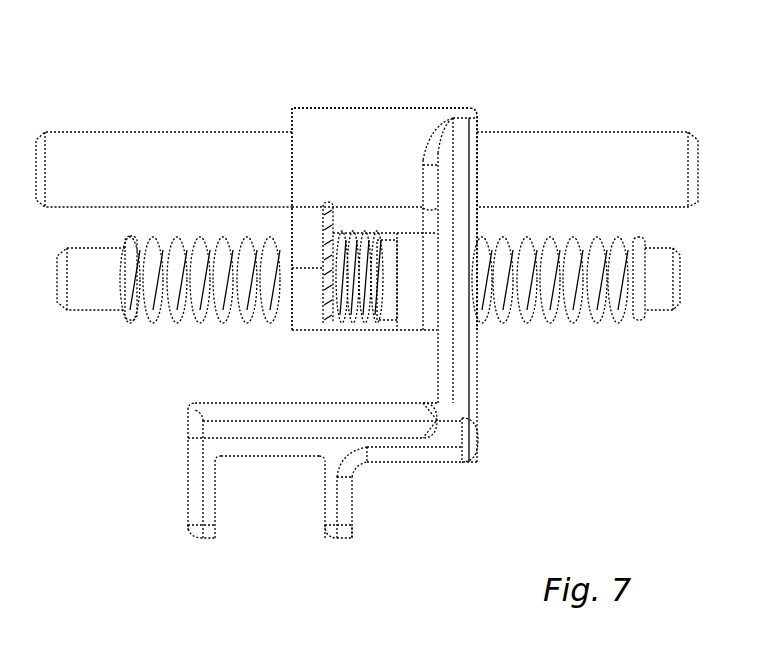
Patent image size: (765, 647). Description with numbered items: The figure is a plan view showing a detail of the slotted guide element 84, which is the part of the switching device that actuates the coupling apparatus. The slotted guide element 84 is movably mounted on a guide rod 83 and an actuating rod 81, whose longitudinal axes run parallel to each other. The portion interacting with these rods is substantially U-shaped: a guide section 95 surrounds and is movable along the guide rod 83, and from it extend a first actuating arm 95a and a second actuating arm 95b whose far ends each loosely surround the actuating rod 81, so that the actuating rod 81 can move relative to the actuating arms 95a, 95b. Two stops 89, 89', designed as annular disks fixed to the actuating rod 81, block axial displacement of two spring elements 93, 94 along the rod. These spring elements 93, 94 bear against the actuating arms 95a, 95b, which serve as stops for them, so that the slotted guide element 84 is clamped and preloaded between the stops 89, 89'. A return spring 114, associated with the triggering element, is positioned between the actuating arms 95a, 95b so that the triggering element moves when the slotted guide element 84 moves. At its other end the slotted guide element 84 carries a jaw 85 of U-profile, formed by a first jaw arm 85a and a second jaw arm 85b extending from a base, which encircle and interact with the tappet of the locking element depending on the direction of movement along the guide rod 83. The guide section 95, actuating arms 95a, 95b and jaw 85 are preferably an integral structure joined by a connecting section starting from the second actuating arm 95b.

The actuating rod 81 is at (660, 300).
The guide rod 83 is at (652, 184).
The slotted guide element 84 is at (336, 101).
The jaw 85 is at (263, 522).
The first jaw arm 85a is at (195, 493).
The second jaw arm 85b is at (345, 503).
The stop 89 is at (660, 307).
The stop 89' is at (103, 308).
The spring element 93 is at (537, 320).
The spring element 94 is at (233, 320).
The guide section 95 is at (373, 132).
The first actuating arm 95a is at (310, 248).
The second actuating arm 95b is at (428, 303).
The return spring 114 is at (367, 330).